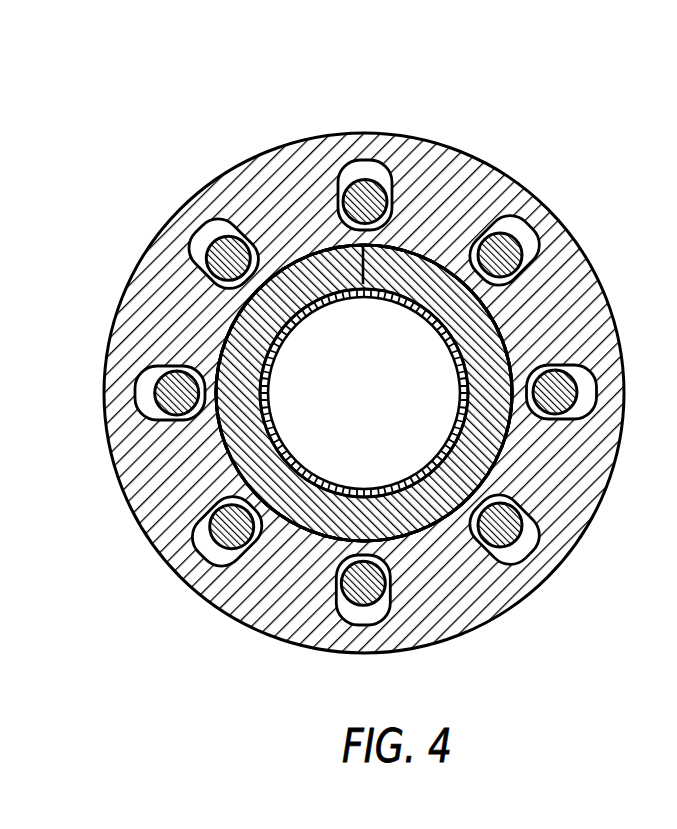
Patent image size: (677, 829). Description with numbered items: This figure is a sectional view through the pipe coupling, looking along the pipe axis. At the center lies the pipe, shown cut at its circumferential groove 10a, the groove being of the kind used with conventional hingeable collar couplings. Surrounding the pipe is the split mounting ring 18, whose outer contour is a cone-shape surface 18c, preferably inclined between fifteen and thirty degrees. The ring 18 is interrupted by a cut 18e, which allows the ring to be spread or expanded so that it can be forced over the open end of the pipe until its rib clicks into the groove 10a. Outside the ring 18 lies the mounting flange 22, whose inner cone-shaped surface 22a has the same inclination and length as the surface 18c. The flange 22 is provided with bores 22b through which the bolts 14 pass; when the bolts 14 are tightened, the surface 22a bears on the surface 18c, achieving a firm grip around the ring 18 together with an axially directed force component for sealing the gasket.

The mounting flange 22 is at (392, 136).
The bores 22b is at (213, 246).
The inner cone-shaped surface 22a is at (364, 393).
The bolts 14 is at (510, 247).
The split mounting ring 18 is at (250, 423).
The cone-shape surface 18c is at (445, 266).
The cut 18e is at (363, 273).
The circumferential groove 10a is at (320, 478).